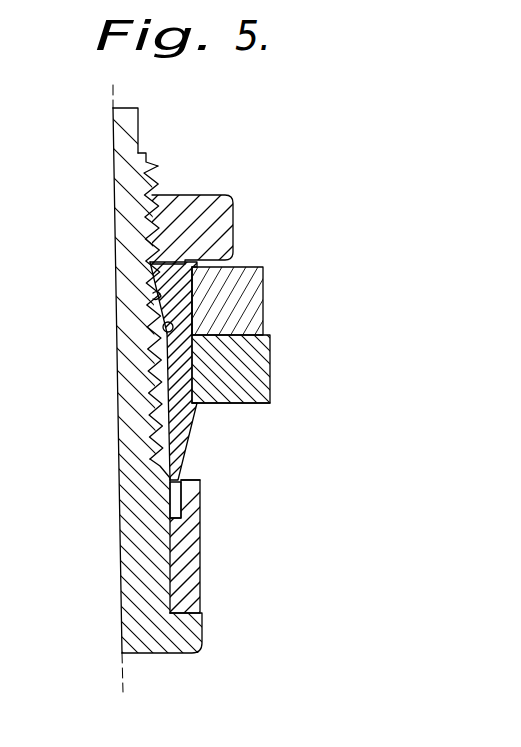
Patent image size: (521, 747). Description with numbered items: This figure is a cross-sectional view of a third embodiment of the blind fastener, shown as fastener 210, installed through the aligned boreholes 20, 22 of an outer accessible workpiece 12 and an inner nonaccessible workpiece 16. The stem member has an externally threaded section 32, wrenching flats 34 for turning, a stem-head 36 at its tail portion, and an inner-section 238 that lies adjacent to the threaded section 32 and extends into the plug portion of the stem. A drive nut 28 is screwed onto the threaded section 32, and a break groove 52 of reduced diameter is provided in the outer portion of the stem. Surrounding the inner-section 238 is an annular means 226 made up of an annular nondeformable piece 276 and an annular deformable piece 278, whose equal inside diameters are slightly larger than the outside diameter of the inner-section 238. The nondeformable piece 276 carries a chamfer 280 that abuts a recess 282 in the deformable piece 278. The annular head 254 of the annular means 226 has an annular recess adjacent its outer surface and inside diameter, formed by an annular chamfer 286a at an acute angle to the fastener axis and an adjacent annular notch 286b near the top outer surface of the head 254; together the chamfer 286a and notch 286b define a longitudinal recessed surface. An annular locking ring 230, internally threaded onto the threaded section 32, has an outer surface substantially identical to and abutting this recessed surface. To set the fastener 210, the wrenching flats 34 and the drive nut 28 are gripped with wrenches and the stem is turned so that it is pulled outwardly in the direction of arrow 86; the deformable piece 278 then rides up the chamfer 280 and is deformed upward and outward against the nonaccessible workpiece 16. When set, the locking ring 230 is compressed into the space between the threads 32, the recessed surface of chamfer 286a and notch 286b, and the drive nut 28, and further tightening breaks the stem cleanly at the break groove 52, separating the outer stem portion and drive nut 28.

The outer workpiece 12 is at (265, 271).
The inner workpiece 16 is at (260, 397).
The borehole 20 is at (195, 310).
The borehole 22 is at (195, 365).
The drive nut 28 is at (200, 206).
The externally threaded section 32 is at (150, 168).
The wrenching flats 34 is at (140, 118).
The stem-head 36 is at (173, 632).
The break groove 52 is at (150, 380).
The arrow 86 is at (92, 643).
The fastener 210 is at (216, 168).
The annular means 226 is at (213, 511).
The annular locking ring 230 is at (153, 270).
The inner-section 238 is at (137, 583).
The annular head 254 is at (203, 286).
The nondeformable piece 276 is at (165, 435).
The deformable piece 278 is at (177, 565).
The chamfer 280 is at (192, 438).
The recess 282 is at (172, 505).
The annular chamfer 286a is at (163, 330).
The annular notch 286b is at (150, 291).